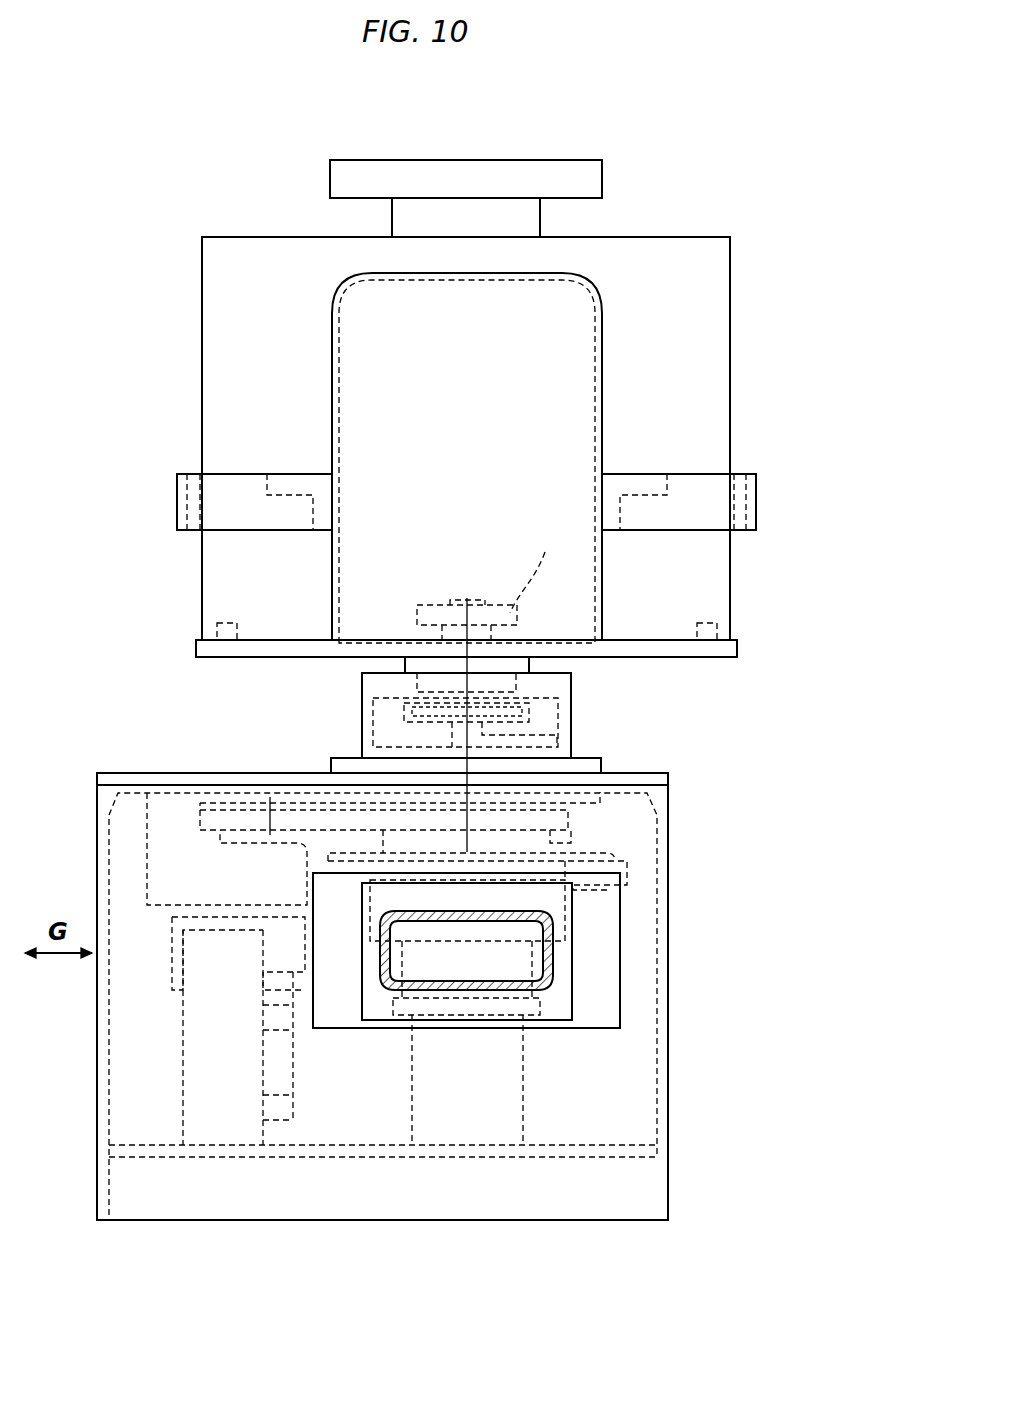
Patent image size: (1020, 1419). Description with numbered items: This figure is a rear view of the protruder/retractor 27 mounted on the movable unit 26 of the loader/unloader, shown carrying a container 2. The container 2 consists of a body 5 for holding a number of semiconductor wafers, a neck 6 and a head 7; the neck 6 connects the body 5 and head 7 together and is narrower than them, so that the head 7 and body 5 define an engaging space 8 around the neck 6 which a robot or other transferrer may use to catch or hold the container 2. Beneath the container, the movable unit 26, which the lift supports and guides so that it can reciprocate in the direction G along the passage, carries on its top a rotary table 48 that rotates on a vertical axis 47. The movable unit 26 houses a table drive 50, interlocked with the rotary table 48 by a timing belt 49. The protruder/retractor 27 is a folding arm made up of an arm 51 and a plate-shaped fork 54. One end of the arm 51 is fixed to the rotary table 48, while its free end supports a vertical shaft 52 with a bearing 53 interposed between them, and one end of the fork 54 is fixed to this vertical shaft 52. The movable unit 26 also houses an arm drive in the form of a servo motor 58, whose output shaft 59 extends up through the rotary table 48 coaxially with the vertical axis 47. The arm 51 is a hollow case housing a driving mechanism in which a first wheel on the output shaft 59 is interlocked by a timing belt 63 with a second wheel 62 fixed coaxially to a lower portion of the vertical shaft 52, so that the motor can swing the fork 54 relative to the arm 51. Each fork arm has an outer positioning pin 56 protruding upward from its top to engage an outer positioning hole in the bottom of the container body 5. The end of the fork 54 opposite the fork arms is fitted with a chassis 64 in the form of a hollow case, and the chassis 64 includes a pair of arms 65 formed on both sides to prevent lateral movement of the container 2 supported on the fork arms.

The container 2 is at (733, 322).
The body 5 is at (695, 272).
The neck 6 is at (443, 217).
The head 7 is at (477, 180).
The engaging space 8 is at (383, 218).
The movable unit 26 is at (673, 1020).
The protruder/retractor 27 is at (585, 680).
The vertical axis 47 is at (467, 600).
The rotary table 48 is at (600, 765).
The timing belt 49 is at (240, 825).
The table drive 50 is at (230, 860).
The arm 51 is at (362, 695).
The vertical shaft 52 is at (448, 598).
The bearing 53 is at (515, 663).
The fork 54 is at (739, 648).
The outer positioning pin 56 is at (223, 623).
The servo motor (arm drive) 58 is at (497, 1115).
The output shaft 59 is at (558, 716).
The second wheel 62 is at (300, 748).
The timing belt 63 is at (404, 710).
The chassis 64 is at (603, 420).
The arms 65 is at (177, 500).